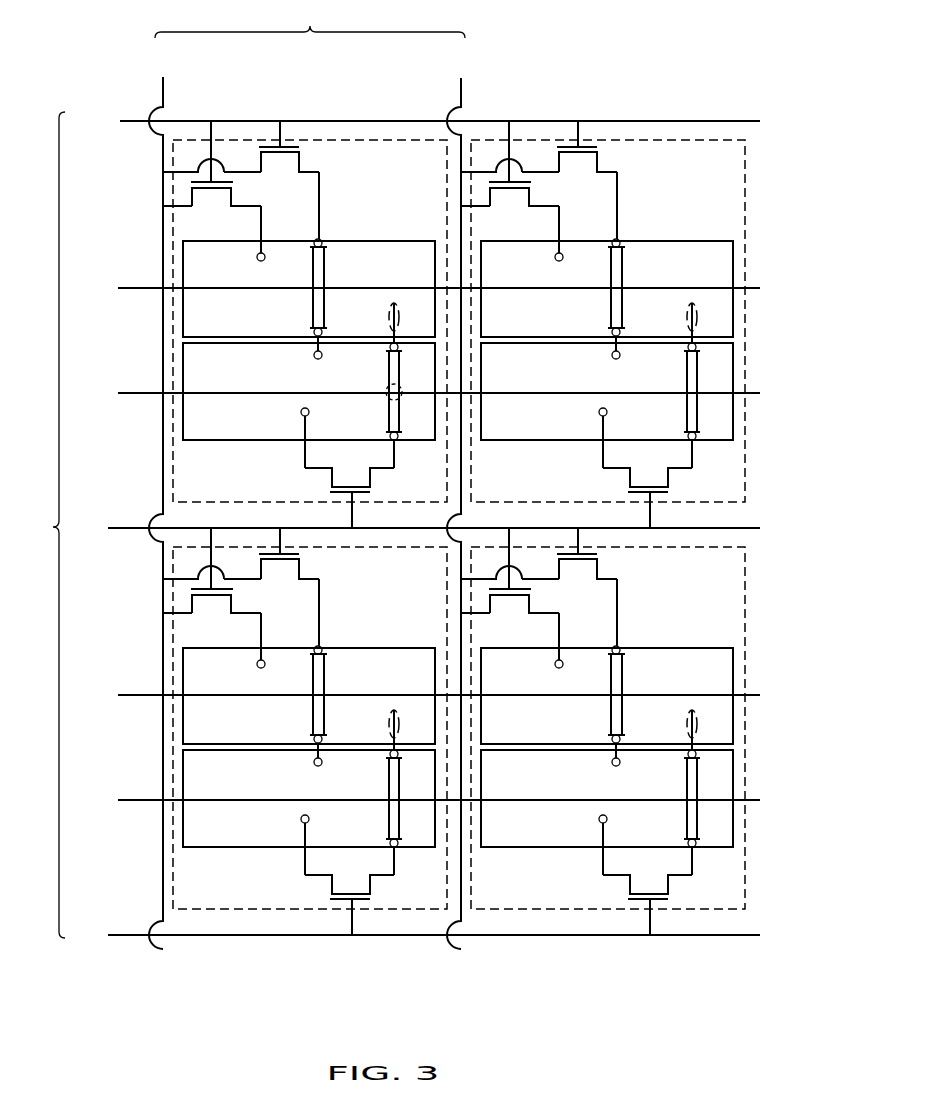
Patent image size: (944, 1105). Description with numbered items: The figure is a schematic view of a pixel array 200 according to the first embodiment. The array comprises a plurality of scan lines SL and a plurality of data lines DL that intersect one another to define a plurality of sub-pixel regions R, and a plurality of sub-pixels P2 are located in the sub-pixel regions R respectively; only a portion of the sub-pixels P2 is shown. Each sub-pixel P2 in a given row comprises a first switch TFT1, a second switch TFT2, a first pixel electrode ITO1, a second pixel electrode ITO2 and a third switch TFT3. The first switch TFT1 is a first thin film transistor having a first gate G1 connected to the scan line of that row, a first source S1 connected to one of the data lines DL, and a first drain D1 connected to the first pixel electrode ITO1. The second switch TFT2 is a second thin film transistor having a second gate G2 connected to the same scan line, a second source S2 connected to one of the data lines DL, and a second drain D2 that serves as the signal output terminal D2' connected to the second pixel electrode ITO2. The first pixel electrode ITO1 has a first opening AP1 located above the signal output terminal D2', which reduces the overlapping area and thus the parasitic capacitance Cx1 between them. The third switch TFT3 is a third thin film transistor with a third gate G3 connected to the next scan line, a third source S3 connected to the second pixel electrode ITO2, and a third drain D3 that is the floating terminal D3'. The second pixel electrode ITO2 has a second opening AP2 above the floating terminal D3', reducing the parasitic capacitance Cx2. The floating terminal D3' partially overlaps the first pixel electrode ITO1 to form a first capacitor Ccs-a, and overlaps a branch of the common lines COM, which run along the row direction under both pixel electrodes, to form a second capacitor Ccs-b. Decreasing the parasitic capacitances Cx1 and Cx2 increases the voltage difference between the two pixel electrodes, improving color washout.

The first switch TFT1 is at (361, 396).
The second switch TFT2 is at (438, 373).
The third switch TFT3 is at (498, 677).
The first gate G1 is at (199, 121).
The first source S1 is at (180, 206).
The first drain D1 is at (262, 220).
The second gate G2 is at (282, 128).
The second source S2 is at (243, 168).
The second drain D2 is at (464, 357).
The signal output terminal D2' is at (445, 530).
The third gate G3 is at (354, 517).
The third source S3 is at (322, 473).
The third drain D3 is at (537, 657).
The floating terminal D3' is at (519, 526).
The parasitic capacitance Cx1 is at (480, 491).
The parasitic capacitance Cx2 is at (556, 595).
The first capacitor Ccs-a is at (558, 515).
The second capacitor Ccs-b is at (386, 394).
The first opening AP1 is at (313, 266).
The second opening AP2 is at (387, 368).
The first pixel electrode ITO1 is at (200, 322).
The second pixel electrode ITO2 is at (200, 424).
The sub-pixel region R is at (390, 137).
The sub-pixel P2 is at (760, 314).
The data lines DL is at (310, 21).
The scan lines SL is at (47, 525).
The common lines COM is at (439, 532).
The pixel array 200 is at (680, 1021).